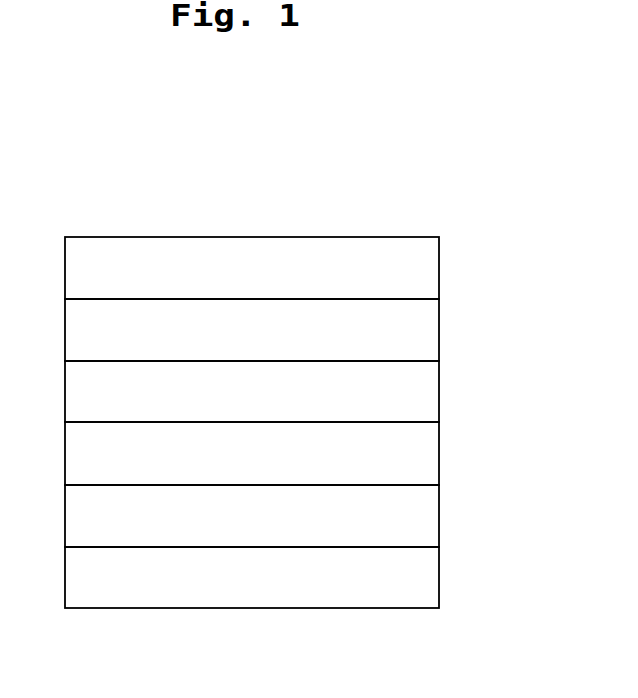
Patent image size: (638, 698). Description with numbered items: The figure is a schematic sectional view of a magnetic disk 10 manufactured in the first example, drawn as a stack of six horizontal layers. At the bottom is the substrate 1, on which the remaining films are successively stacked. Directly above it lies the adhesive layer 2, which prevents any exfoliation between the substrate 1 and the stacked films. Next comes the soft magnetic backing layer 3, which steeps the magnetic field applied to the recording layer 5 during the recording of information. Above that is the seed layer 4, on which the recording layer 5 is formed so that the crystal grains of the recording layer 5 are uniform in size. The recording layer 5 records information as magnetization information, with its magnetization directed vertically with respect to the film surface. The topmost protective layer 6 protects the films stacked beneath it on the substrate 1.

The magnetic disk 10 is at (139, 207).
The protective layer 6 is at (439, 261).
The recording layer 5 is at (440, 327).
The seed layer 4 is at (440, 389).
The soft magnetic backing layer 3 is at (440, 457).
The adhesive layer 2 is at (440, 514).
The substrate 1 is at (440, 579).